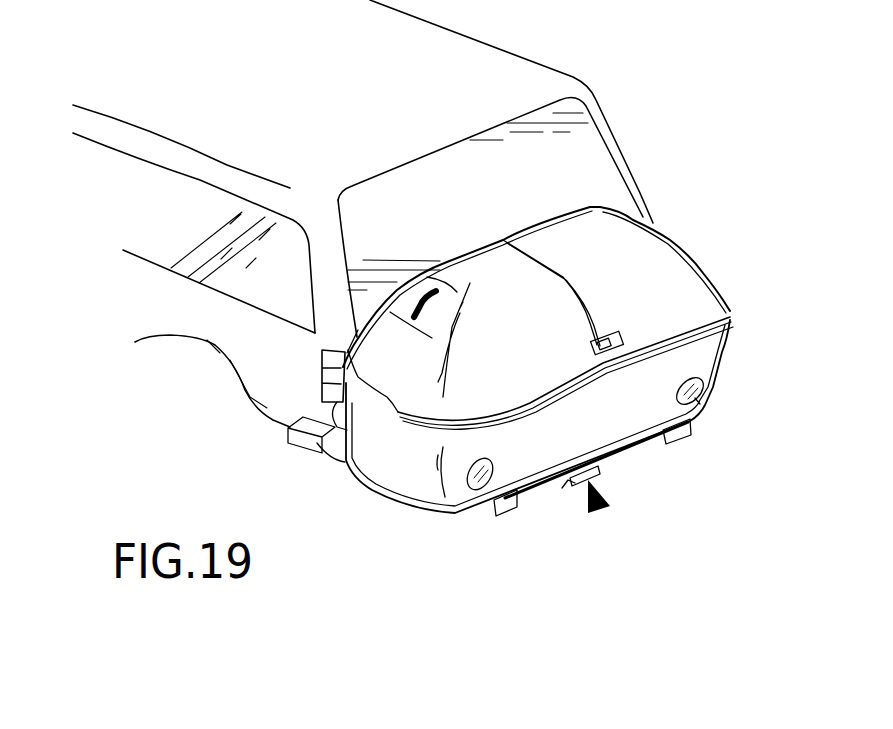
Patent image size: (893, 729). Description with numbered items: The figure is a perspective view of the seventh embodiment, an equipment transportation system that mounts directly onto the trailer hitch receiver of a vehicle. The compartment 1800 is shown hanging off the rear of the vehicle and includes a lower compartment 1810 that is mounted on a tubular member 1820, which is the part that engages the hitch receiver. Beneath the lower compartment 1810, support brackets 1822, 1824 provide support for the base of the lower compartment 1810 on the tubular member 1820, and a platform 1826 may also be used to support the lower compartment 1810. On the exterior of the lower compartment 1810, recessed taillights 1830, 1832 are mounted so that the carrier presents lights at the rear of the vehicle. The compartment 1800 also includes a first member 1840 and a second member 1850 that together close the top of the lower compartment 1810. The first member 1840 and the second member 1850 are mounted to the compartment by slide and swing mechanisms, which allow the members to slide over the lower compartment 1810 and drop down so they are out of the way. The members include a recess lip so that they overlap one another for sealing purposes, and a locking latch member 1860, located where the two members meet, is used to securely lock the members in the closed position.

The compartment 1800 is at (728, 242).
The lower compartment 1810 is at (545, 460).
The tubular member 1820 is at (600, 467).
The support bracket 1822 is at (567, 485).
The support bracket 1824 is at (613, 463).
The platform 1826 is at (597, 497).
The recessed taillight 1830 is at (470, 490).
The recessed taillight 1832 is at (697, 400).
The first member 1840 is at (385, 373).
The second member 1850 is at (650, 226).
The locking latch member 1860 is at (660, 338).